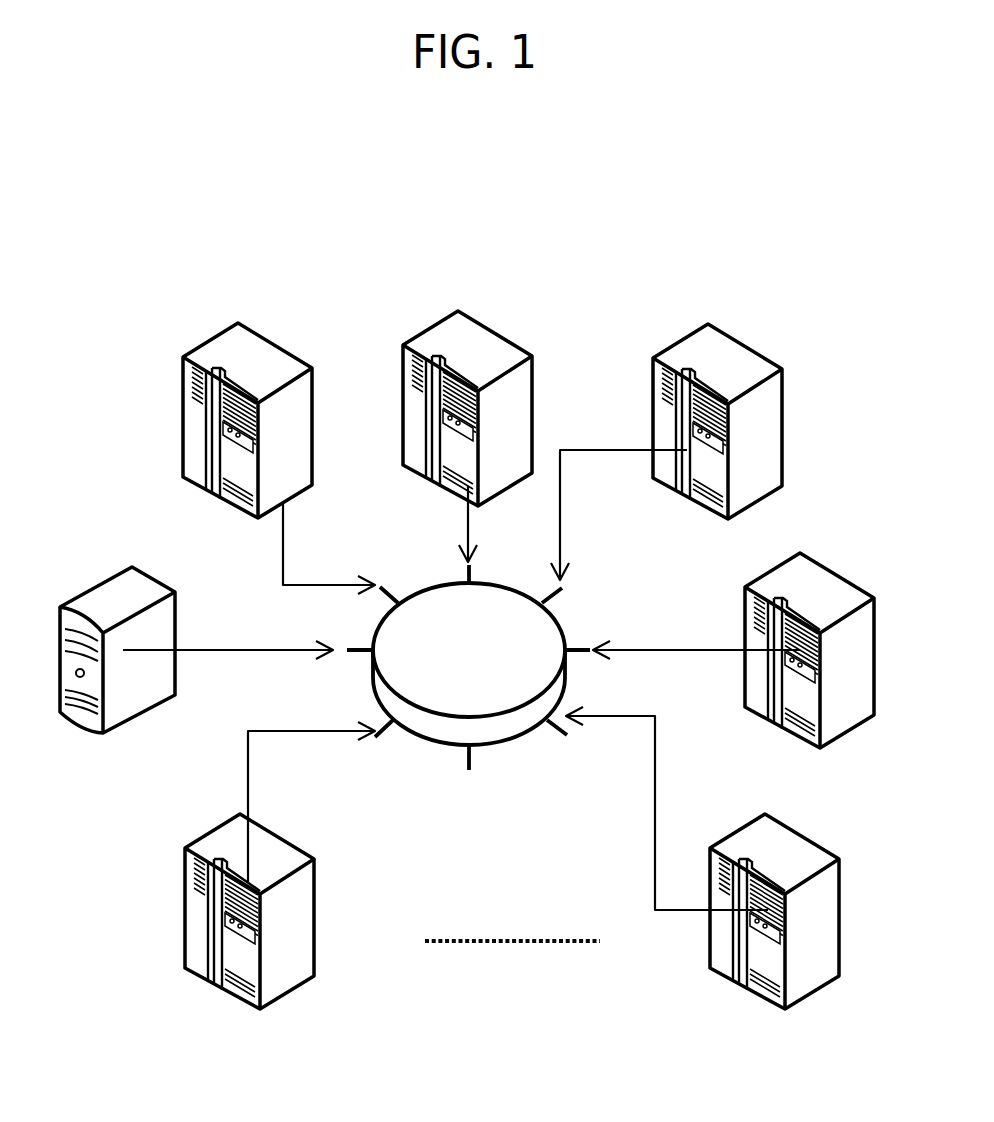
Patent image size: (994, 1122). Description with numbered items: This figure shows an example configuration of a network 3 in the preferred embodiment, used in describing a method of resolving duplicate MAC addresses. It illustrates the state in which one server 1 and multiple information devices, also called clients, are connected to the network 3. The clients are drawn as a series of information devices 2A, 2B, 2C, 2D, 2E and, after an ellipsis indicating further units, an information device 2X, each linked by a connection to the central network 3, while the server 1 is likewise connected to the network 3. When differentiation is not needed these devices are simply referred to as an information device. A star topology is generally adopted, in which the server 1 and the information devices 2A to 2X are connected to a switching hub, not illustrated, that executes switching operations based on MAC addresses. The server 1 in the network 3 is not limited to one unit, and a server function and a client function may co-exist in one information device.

The server 1 is at (82, 592).
The information device 2A is at (270, 342).
The information device 2B is at (475, 320).
The information device 2C is at (752, 348).
The information device 2D is at (840, 577).
The information device 2E is at (840, 882).
The information device 2X is at (305, 853).
The network 3 is at (555, 615).